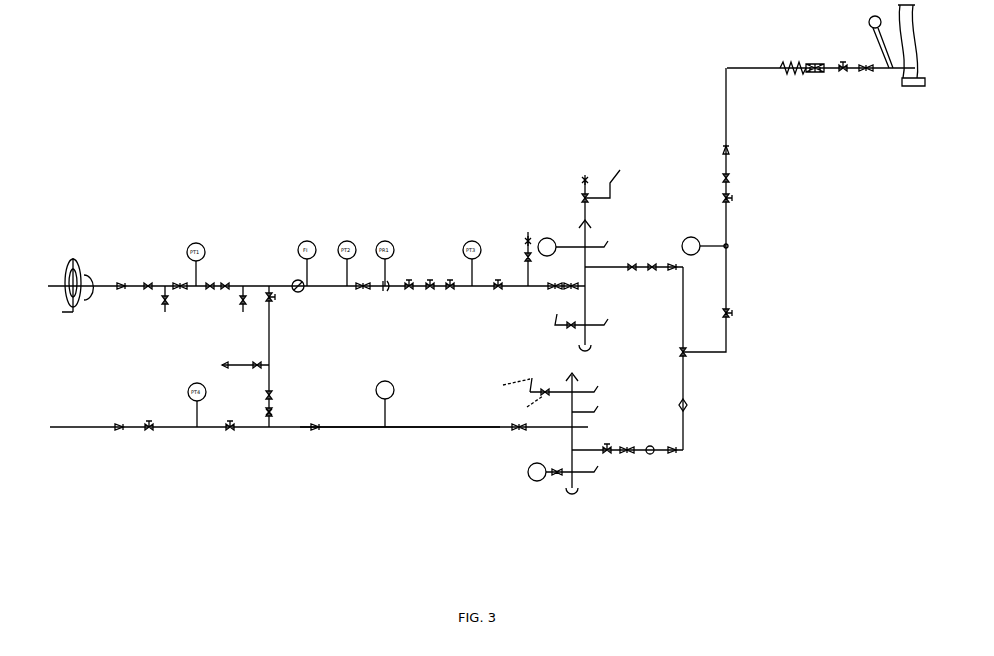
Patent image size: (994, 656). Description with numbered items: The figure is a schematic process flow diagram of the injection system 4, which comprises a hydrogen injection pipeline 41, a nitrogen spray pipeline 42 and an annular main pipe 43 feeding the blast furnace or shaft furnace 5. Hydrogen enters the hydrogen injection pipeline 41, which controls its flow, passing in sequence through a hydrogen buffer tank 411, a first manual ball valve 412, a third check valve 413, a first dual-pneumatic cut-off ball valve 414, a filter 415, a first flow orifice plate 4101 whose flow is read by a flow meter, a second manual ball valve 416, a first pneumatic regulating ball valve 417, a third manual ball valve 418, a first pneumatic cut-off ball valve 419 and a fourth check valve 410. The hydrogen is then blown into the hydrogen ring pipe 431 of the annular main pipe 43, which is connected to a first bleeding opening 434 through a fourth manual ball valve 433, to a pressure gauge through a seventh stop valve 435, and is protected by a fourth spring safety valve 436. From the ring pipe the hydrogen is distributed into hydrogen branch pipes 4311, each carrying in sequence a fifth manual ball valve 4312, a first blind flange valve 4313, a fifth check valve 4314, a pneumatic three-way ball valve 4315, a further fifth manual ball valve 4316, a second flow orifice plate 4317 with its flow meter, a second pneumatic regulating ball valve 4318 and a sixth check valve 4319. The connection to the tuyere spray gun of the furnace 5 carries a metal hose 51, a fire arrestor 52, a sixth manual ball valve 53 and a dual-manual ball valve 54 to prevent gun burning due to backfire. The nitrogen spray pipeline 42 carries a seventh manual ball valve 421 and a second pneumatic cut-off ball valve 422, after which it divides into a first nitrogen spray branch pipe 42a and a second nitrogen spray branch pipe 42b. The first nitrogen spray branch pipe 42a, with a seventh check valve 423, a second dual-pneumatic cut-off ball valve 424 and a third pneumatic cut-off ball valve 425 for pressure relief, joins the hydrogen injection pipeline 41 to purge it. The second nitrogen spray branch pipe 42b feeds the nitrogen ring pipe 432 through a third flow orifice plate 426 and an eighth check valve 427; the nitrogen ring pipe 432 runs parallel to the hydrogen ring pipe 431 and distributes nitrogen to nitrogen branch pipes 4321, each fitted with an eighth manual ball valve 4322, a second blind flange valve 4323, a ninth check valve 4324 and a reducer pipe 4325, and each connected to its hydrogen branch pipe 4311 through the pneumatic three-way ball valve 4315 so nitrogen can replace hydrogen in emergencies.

The injection system 4 is at (360, 183).
The hydrogen injection pipeline 41 is at (90, 290).
The hydrogen buffer tank 411 is at (68, 262).
The first manual ball valve 412 is at (148, 282).
The third check valve 413 is at (176, 282).
The first dual-pneumatic cut-off ball valve 414 is at (225, 280).
The filter 415 is at (292, 280).
The second manual ball valve 416 is at (409, 292).
The first pneumatic regulating ball valve 417 is at (430, 292).
The third manual ball valve 418 is at (450, 292).
The first pneumatic cut-off ball valve 419 is at (498, 292).
The fourth check valve 410 is at (553, 283).
The first flow orifice plate 4101 is at (383, 290).
The nitrogen spray pipeline 42 is at (98, 435).
The seventh manual ball valve 421 is at (152, 432).
The second pneumatic cut-off ball valve 422 is at (232, 432).
The seventh check valve 423 is at (272, 420).
The second dual-pneumatic cut-off ball valve 424 is at (273, 299).
The third pneumatic cut-off ball valve 425 is at (254, 362).
The third flow orifice plate 426 is at (387, 432).
The eighth check valve 427 is at (517, 430).
The first nitrogen spray branch pipe 42a is at (275, 340).
The second nitrogen spray branch pipe 42b is at (342, 432).
The annular main pipe 43 is at (661, 302).
The hydrogen ring pipe 431 is at (590, 347).
The nitrogen ring pipe 432 is at (578, 493).
The fourth manual ball valve 433 is at (569, 328).
The first bleeding opening 434 is at (556, 315).
The seventh stop valve 435 is at (575, 245).
The fourth spring safety valve 436 is at (588, 197).
The hydrogen branch pipe 4311 is at (612, 267).
The fifth manual ball valve 4312 is at (632, 272).
The first blind flange valve 4313 is at (652, 272).
The fifth check valve 4314 is at (672, 264).
The pneumatic three-way ball valve 4315 is at (690, 356).
The fifth manual ball valve 4316 is at (730, 315).
The second flow orifice plate 4317 is at (730, 250).
The second pneumatic regulating ball valve 4318 is at (730, 200).
The sixth check valve 4319 is at (731, 178).
The nitrogen branch pipe 4321 is at (598, 452).
The eighth manual ball valve 4322 is at (609, 448).
The second blind flange valve 4323 is at (652, 455).
The ninth check valve 4324 is at (676, 453).
The reducer pipe 4325 is at (688, 410).
The blast furnace or shaft furnace 5 is at (912, 45).
The metal hose 51 is at (792, 75).
The fire arrestor 52 is at (812, 75).
The sixth manual ball valve 53 is at (840, 65).
The dual-manual ball valve 54 is at (867, 75).